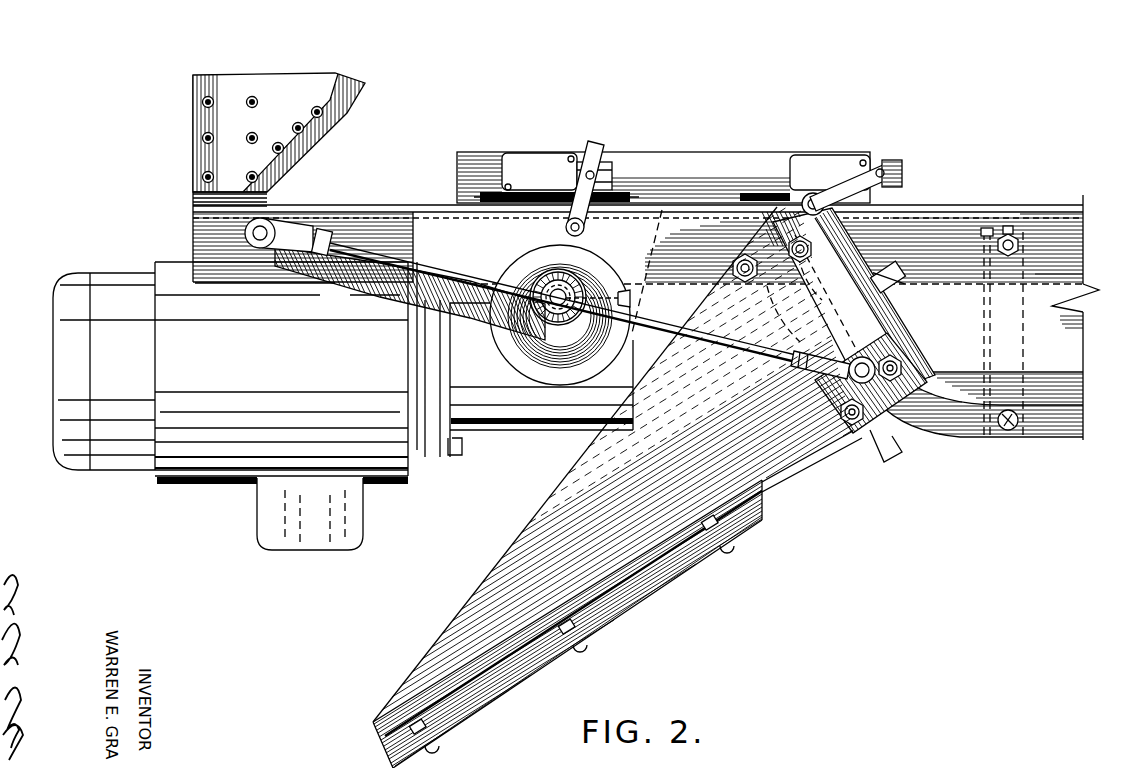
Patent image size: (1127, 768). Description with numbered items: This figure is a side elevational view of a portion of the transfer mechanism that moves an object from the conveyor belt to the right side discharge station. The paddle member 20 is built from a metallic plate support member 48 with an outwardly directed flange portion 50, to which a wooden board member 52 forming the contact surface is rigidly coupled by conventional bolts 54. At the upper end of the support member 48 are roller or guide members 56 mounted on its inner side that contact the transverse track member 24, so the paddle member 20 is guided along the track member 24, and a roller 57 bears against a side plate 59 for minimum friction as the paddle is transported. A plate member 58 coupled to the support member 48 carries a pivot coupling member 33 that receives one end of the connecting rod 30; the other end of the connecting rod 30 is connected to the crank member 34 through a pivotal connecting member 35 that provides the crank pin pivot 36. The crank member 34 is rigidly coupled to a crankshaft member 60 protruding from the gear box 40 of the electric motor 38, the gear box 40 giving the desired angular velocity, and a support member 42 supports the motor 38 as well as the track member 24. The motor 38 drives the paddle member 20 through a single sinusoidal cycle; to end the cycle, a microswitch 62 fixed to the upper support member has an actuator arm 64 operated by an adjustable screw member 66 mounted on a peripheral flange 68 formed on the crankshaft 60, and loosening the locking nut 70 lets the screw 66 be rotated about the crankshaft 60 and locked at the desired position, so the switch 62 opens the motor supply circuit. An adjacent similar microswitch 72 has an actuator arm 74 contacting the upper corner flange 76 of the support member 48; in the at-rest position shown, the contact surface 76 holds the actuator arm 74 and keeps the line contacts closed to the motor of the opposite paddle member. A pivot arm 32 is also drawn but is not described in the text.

The paddle member 20 is at (637, 487).
The transverse track member 24 is at (940, 432).
The connecting rod 30 is at (722, 340).
The pivot arm 32 is at (830, 340).
The pivot coupling member 33 is at (800, 378).
The crank member 34 is at (372, 250).
The pivotal connecting member 35 is at (272, 262).
The crank pin pivot 36 is at (268, 224).
The electric motor 38 is at (168, 488).
The gear box 40 is at (510, 425).
The support member 42 is at (193, 126).
The metallic plate support member 48 is at (515, 505).
The outwardly directed flange portion 50 is at (795, 485).
The wooden board member 52 is at (675, 578).
The bolt 54 is at (570, 620).
The roller or guide member 56 is at (745, 283).
The roller 57 is at (900, 270).
The plate member 58 is at (818, 392).
The side plate 59 is at (1053, 341).
The crankshaft member 60 is at (548, 288).
The microswitch 62 is at (540, 160).
The actuator arm 64 is at (600, 150).
The adjustable screw member 66 is at (633, 299).
The peripheral flange 68 is at (575, 262).
The locking nut 70 is at (584, 292).
The microswitch 72 is at (810, 155).
The actuator arm 74 is at (890, 165).
The upper corner flange 76 is at (792, 198).